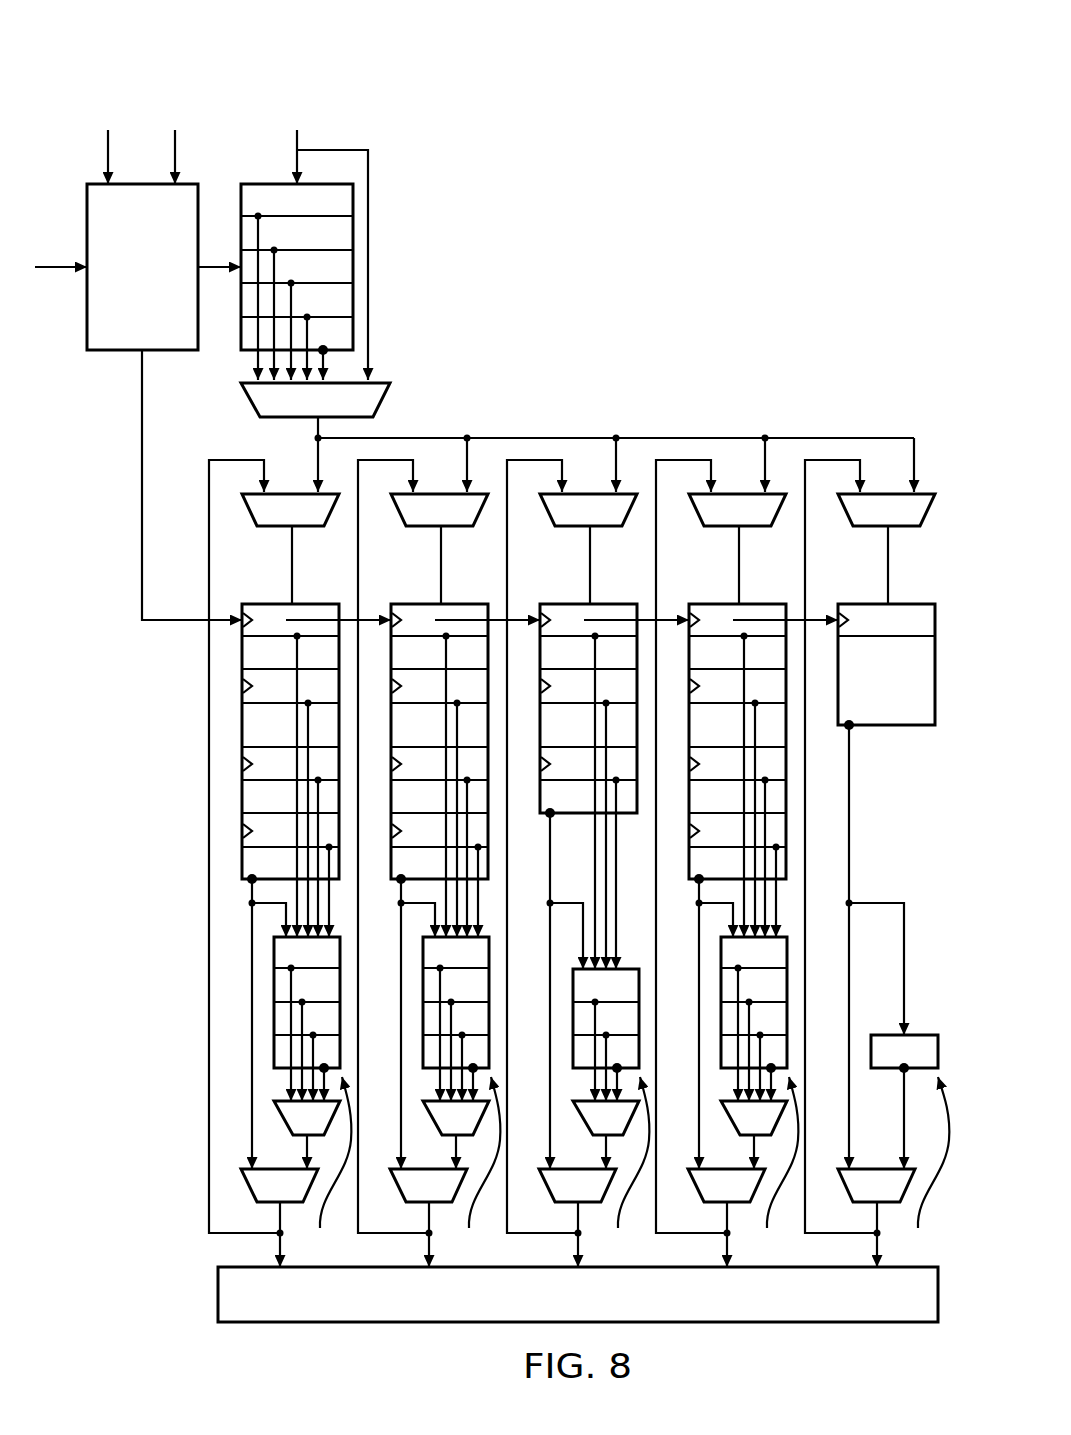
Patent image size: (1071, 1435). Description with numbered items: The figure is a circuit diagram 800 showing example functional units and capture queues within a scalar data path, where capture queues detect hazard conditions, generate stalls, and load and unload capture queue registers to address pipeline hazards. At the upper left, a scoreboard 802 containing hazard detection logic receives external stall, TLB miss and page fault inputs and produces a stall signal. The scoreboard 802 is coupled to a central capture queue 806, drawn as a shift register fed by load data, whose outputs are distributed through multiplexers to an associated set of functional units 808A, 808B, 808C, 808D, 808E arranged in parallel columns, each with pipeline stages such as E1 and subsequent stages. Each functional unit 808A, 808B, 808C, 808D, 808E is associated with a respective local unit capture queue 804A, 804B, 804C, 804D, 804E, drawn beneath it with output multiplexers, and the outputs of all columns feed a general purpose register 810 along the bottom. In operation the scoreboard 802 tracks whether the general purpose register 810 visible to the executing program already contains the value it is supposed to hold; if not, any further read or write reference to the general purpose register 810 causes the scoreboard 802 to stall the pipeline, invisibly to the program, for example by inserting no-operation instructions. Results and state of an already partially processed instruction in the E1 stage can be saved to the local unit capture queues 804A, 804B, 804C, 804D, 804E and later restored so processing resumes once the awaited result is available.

The circuit diagram 800 is at (685, 180).
The scoreboard 802 is at (162, 283).
The central capture queue 806 is at (268, 182).
The functional unit 808A is at (267, 600).
The functional unit 808B is at (414, 831).
The functional unit 808C is at (563, 831).
The functional unit 808D is at (712, 831).
The functional unit 808E is at (862, 831).
The local unit capture queue 804A is at (280, 863).
The local unit capture queue 804B is at (429, 863).
The local unit capture queue 804C is at (578, 863).
The local unit capture queue 804D is at (727, 863).
The local unit capture queue 804E is at (877, 863).
The general purpose register 810 is at (598, 1310).